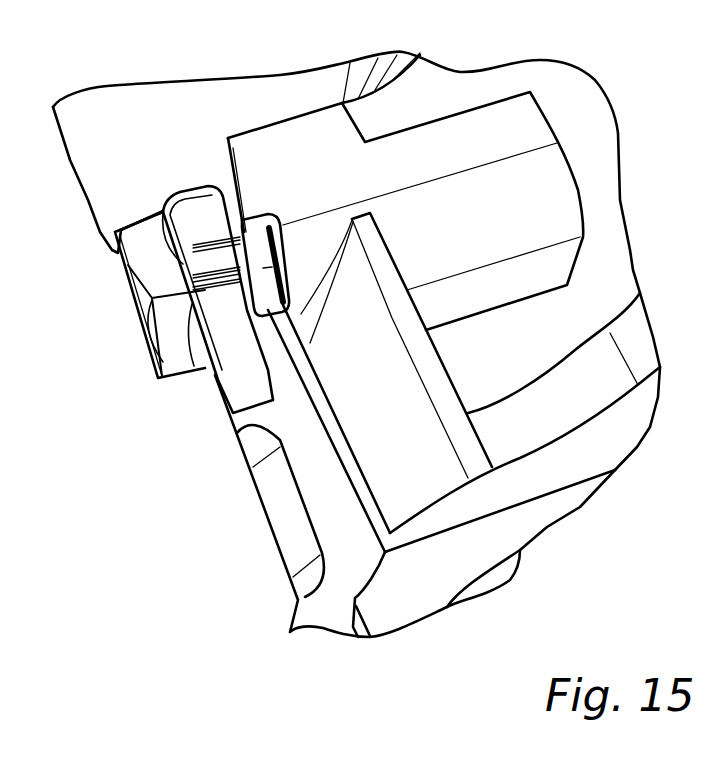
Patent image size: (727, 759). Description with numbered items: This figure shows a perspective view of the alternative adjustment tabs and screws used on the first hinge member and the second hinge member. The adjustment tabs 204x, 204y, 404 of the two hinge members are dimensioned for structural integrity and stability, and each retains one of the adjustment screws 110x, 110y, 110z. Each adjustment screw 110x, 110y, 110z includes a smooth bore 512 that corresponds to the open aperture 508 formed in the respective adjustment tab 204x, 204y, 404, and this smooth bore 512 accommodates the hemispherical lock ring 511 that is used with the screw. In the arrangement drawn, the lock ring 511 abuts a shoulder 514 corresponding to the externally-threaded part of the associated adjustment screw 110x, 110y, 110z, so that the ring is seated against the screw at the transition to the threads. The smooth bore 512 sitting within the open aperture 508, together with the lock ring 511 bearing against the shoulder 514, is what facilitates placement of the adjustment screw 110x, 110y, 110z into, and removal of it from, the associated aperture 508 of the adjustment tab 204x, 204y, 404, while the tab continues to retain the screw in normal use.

The adjustment tab 204x is at (251, 151).
The adjustment tab 204y is at (216, 263).
The adjustment tab 404 is at (222, 233).
The adjustment screw 110x is at (118, 336).
The adjustment screw 110y is at (160, 295).
The adjustment screw 110z is at (167, 352).
The open aperture 508 is at (200, 193).
The hemispherical lock ring 511 is at (243, 216).
The smooth bore 512 is at (212, 267).
The shoulder 514 is at (285, 277).